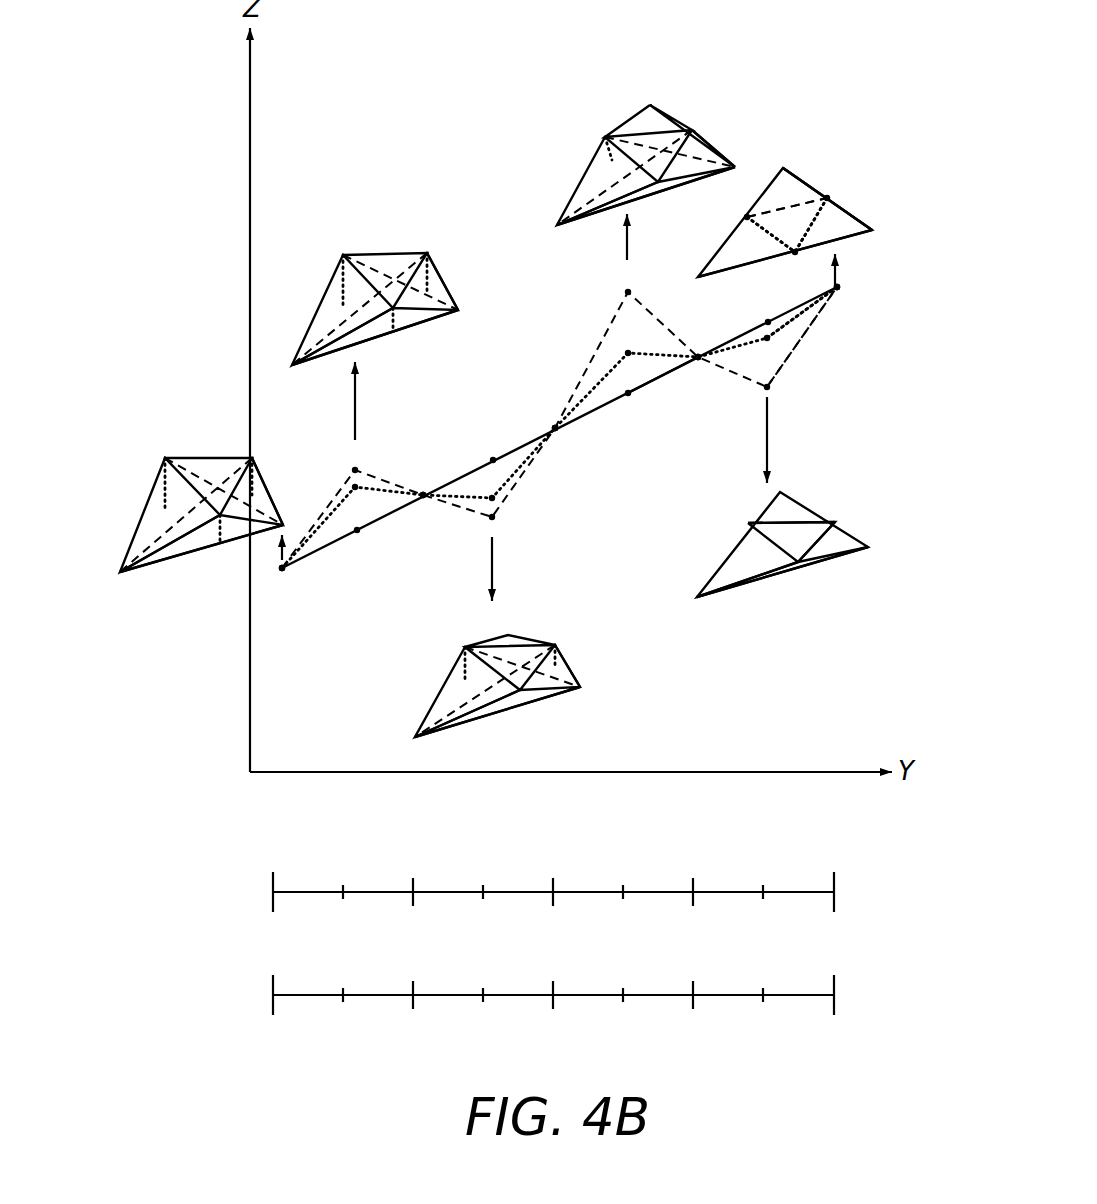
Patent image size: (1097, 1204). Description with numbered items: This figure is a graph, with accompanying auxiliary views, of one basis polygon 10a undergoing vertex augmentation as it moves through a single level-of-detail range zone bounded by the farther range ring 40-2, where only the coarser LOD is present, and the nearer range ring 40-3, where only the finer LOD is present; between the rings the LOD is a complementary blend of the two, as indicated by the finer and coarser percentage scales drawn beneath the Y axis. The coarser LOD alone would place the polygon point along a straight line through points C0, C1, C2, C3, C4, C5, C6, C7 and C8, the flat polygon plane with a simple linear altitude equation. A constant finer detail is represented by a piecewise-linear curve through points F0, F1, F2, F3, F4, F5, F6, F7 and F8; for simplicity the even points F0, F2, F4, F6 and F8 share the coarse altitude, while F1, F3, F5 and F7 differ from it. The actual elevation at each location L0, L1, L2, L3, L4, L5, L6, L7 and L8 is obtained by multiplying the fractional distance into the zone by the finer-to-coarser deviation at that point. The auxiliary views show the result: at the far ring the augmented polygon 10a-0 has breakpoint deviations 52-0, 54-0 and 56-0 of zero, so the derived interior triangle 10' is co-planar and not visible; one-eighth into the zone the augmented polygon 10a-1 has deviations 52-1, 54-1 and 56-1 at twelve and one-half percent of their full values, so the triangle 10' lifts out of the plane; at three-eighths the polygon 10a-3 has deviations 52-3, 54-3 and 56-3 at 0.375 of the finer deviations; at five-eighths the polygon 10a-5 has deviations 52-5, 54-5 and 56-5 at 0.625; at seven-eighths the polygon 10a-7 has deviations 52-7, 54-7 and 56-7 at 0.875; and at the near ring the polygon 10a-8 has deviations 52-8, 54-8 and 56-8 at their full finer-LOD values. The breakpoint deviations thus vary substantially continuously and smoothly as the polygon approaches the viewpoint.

The augmented polygon 10a is at (440, 76).
The augmented interior triangle 10' is at (787, 225).
The augmented polygon at position L8 10a-8 is at (118, 574).
The augmented polygon at position L7 10a-7 is at (462, 312).
The augmented polygon at position L5 10a-5 is at (583, 687).
The augmented polygon at position L3 10a-3 is at (740, 158).
The augmented polygon at position L1 10a-1 is at (696, 600).
The augmented polygon at position L0 10a-0 is at (817, 180).
The breakpoint deviation 52-8 is at (160, 497).
The breakpoint deviation 54-8 is at (262, 488).
The breakpoint deviation 56-8 is at (220, 540).
The breakpoint deviation 52-7 is at (345, 282).
The breakpoint deviation 54-7 is at (430, 276).
The breakpoint deviation 56-7 is at (400, 330).
The breakpoint deviation 52-5 is at (460, 668).
The breakpoint deviation 54-5 is at (560, 658).
The breakpoint deviation 56-5 is at (520, 692).
The breakpoint deviation 52-3 is at (605, 160).
The breakpoint deviation 54-3 is at (695, 132).
The breakpoint deviation 56-3 is at (660, 185).
The breakpoint deviation 52-1 is at (750, 523).
The breakpoint deviation 54-1 is at (836, 522).
The breakpoint deviation 56-1 is at (800, 565).
The breakpoint deviation 52-0 is at (747, 214).
The breakpoint deviation 54-0 is at (828, 198).
The breakpoint deviation 56-0 is at (795, 254).
The coarser LOD point C8 is at (282, 572).
The finer LOD point F8 is at (287, 605).
The continuous-LOD point L8 is at (287, 616).
The coarser LOD point C7 is at (357, 532).
The finer LOD point F7 is at (355, 470).
The continuous-LOD point L7 is at (357, 487).
The coarser LOD point C6 is at (423, 493).
The finer LOD point F6 is at (423, 534).
The continuous-LOD point L6 is at (423, 497).
The coarser LOD point C5 is at (493, 460).
The finer LOD point F5 is at (492, 517).
The continuous-LOD point L5 is at (492, 498).
The coarser LOD point C4 is at (557, 430).
The finer LOD point F4 is at (576, 460).
The continuous-LOD point L4 is at (576, 471).
The coarser LOD point C3 is at (628, 395).
The finer LOD point F3 is at (628, 292).
The continuous-LOD point L3 is at (628, 353).
The coarser LOD point C2 is at (698, 359).
The finer LOD point F2 is at (708, 391).
The continuous-LOD point L2 is at (708, 402).
The coarser LOD point C1 is at (768, 322).
The finer LOD point F1 is at (767, 387).
The continuous-LOD point L1 is at (767, 338).
The coarser LOD point C0 is at (837, 287).
The finer LOD point F0 is at (865, 296).
The continuous-LOD point L0 is at (865, 309).
The range ring 40-3 is at (275, 806).
The range ring 40-2 is at (833, 800).